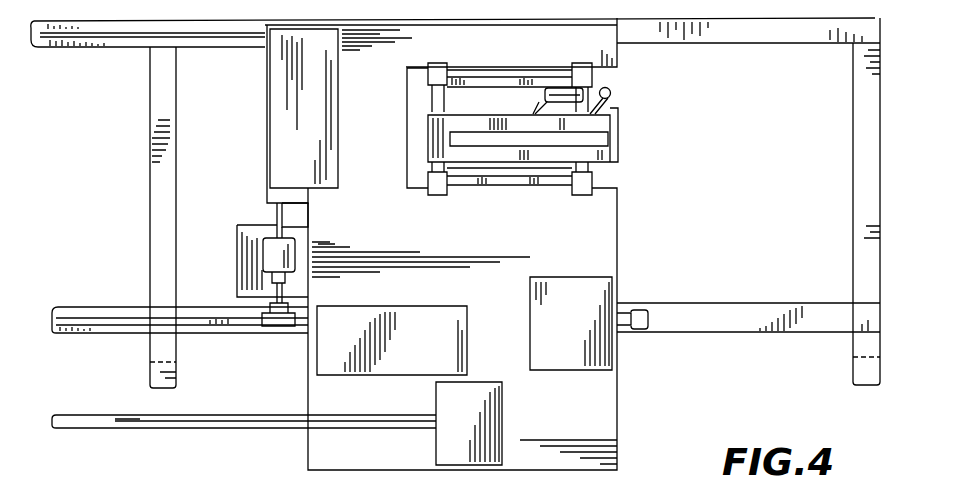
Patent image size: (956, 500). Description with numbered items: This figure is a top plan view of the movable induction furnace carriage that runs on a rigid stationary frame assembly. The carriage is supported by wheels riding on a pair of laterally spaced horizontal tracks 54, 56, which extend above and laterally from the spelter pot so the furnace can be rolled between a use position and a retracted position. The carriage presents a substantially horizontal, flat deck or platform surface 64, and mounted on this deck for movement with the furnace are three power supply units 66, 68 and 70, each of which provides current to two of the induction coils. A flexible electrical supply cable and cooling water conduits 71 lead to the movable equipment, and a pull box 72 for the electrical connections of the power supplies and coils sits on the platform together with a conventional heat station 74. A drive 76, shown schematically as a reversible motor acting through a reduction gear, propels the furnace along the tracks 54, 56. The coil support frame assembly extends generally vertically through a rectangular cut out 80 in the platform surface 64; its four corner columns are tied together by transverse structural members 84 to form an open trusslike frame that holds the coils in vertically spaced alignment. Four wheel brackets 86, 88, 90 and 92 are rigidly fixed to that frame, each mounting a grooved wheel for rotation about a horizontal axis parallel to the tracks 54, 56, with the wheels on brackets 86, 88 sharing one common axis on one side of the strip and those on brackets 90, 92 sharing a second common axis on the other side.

The horizontal track 54 is at (104, 334).
The horizontal track 56 is at (88, 48).
The platform surface 64 is at (467, 244).
The power supply unit 66 is at (442, 343).
The power supply unit 68 is at (318, 122).
The power supply unit 70 is at (243, 245).
The flexible electrical supply cable and cooling water conduits 71 is at (222, 430).
The pull box 72 is at (468, 424).
The heat station 74 is at (572, 329).
The drive 76 is at (267, 258).
The rectangular cut out 80 is at (410, 126).
The transverse structural member 84 is at (432, 95).
The wheel bracket 86 is at (434, 194).
The wheel bracket 88 is at (588, 195).
The wheel bracket 90 is at (578, 62).
The wheel bracket 92 is at (440, 63).